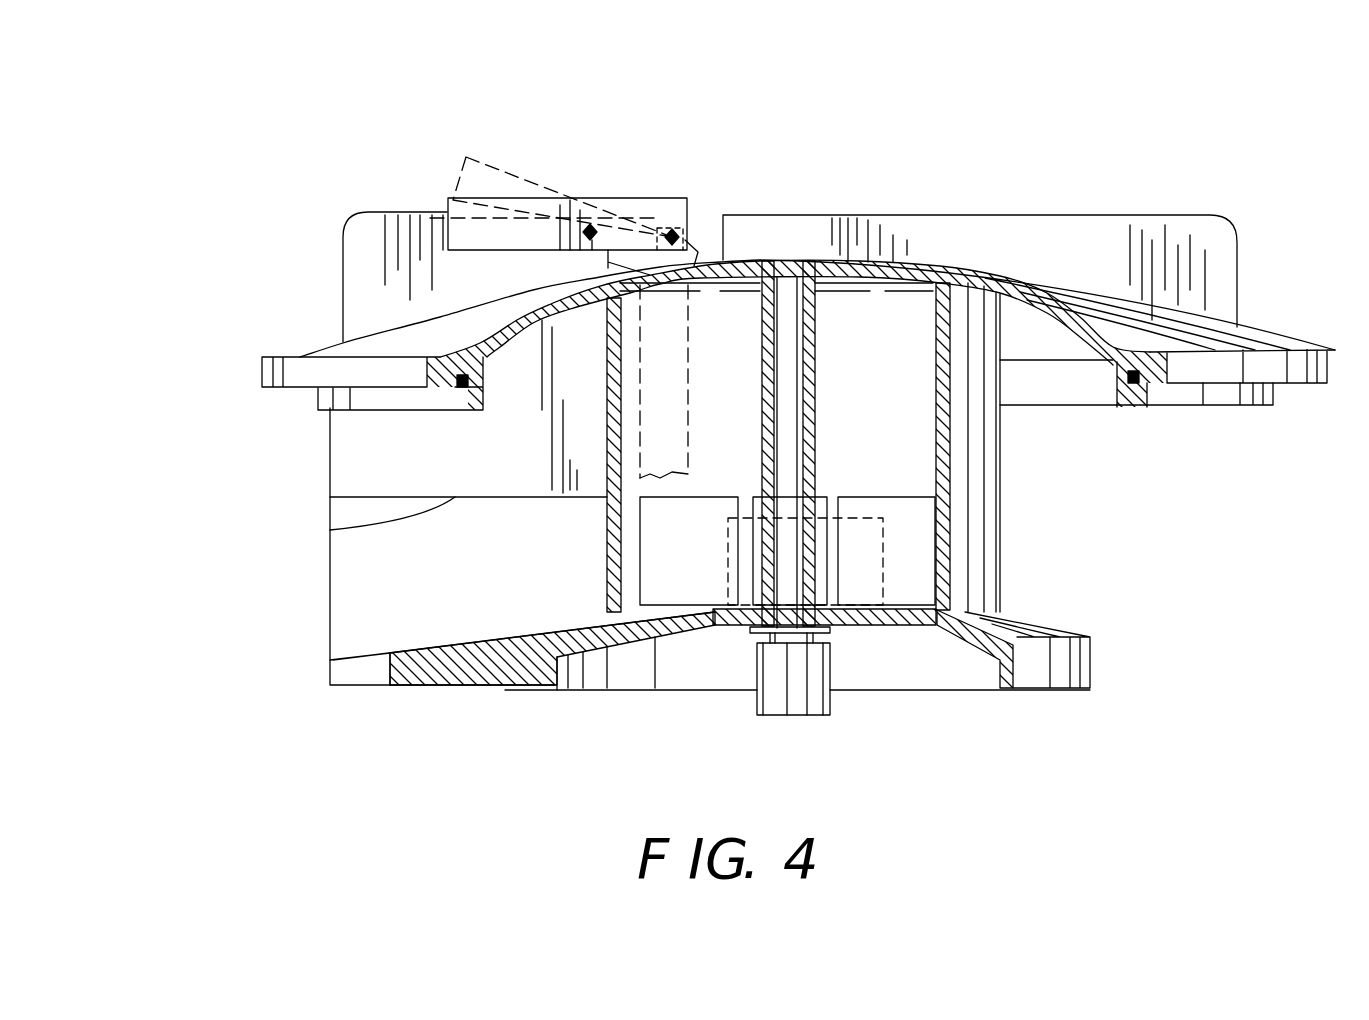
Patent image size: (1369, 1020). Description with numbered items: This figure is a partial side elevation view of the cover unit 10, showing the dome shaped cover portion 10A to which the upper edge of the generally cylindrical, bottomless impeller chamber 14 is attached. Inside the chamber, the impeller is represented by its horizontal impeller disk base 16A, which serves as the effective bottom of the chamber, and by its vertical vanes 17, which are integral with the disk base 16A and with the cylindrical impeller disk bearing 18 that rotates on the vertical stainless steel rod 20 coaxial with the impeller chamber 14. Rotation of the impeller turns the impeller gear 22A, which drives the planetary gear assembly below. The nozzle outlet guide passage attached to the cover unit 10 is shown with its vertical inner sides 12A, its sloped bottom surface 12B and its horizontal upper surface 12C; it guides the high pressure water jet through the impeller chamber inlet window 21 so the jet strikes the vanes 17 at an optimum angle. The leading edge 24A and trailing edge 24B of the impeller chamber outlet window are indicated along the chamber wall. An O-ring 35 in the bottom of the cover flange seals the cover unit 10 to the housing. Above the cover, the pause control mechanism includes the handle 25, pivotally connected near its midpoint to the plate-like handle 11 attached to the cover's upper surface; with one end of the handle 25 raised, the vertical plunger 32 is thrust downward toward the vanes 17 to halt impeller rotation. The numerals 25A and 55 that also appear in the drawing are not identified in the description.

The cover unit 10 is at (337, 338).
The dome shaped cover portion 10A is at (262, 368).
The handle 11 is at (360, 243).
The vertical inner sides 12A is at (362, 515).
The sloped bottom surface 12B is at (414, 636).
The horizontal upper surface 12C is at (455, 500).
The impeller chamber 14 is at (1000, 502).
The impeller disk base 16A is at (878, 627).
The impeller vanes 17 is at (690, 554).
The impeller disk bearing 18 is at (833, 495).
The vertical cylindrical rod 20 is at (795, 335).
The impeller chamber inlet window 21 is at (608, 522).
The impeller gear 22A is at (760, 692).
The leading edge of outlet window 24A is at (885, 577).
The trailing edge of outlet window 24B is at (733, 518).
The handle 25 is at (648, 205).
The bracket pivoted position 25A is at (547, 185).
The vertical plunger 32 is at (670, 313).
The O-ring 35 is at (458, 382).
The pivot pin 55 is at (592, 228).